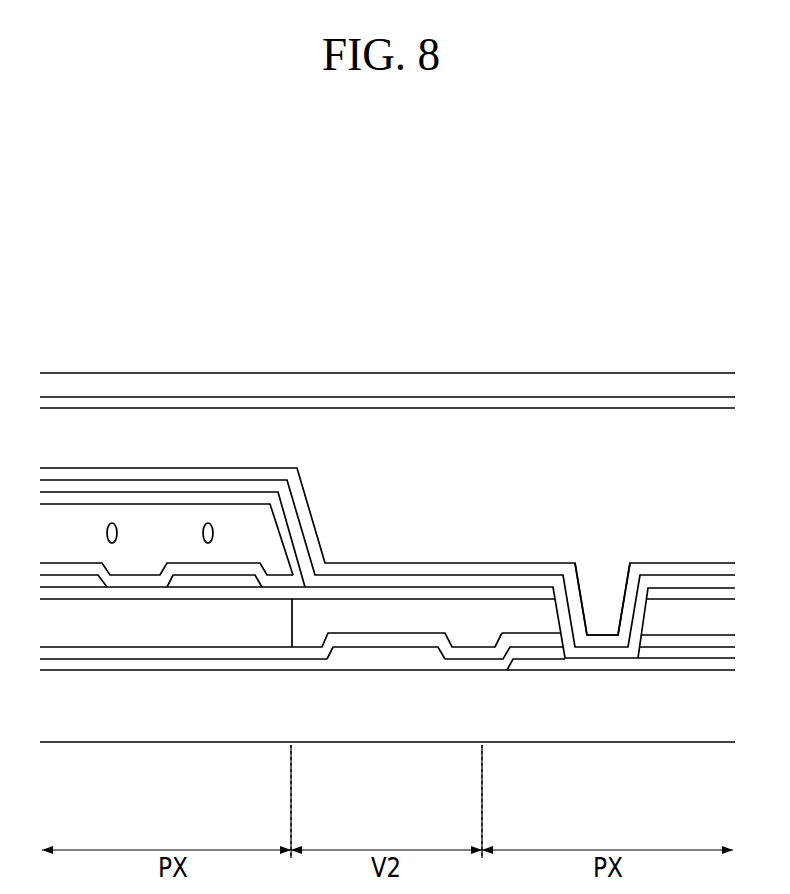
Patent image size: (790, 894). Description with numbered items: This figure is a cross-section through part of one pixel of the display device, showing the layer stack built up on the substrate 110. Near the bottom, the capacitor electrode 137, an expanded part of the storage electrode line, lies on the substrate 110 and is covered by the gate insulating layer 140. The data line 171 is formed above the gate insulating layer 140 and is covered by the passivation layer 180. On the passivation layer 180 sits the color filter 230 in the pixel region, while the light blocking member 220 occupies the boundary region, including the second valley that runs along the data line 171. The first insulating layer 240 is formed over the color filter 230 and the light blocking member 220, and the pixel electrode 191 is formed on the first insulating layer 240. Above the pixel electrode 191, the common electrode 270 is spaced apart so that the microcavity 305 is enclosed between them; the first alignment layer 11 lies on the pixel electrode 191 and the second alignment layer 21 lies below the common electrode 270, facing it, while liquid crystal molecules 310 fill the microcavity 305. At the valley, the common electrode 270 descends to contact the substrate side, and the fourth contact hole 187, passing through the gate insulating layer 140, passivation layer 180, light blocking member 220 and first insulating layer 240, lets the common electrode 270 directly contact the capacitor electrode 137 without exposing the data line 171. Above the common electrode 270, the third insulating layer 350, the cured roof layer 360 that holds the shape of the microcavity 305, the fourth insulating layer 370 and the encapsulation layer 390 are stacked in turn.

The first alignment layer 11 is at (133, 580).
The second alignment layer 21 is at (62, 498).
The substrate 110 is at (597, 710).
The capacitor electrode 137 is at (662, 665).
The gate insulating layer 140 is at (337, 665).
The data line 171 is at (395, 653).
The passivation layer 180 is at (188, 653).
The fourth contact hole 187 is at (643, 617).
The pixel electrode 191 is at (72, 580).
The light blocking member 220 is at (525, 617).
The color filter 230 is at (248, 630).
The first insulating layer 240 is at (427, 593).
The common electrode 270 is at (225, 487).
The microcavity 305 is at (178, 532).
The liquid crystal molecules 310 is at (102, 532).
The third insulating layer 350 is at (108, 473).
The roof layer 360 is at (385, 430).
The fourth insulating layer 370 is at (290, 405).
The encapsulation layer 390 is at (458, 383).